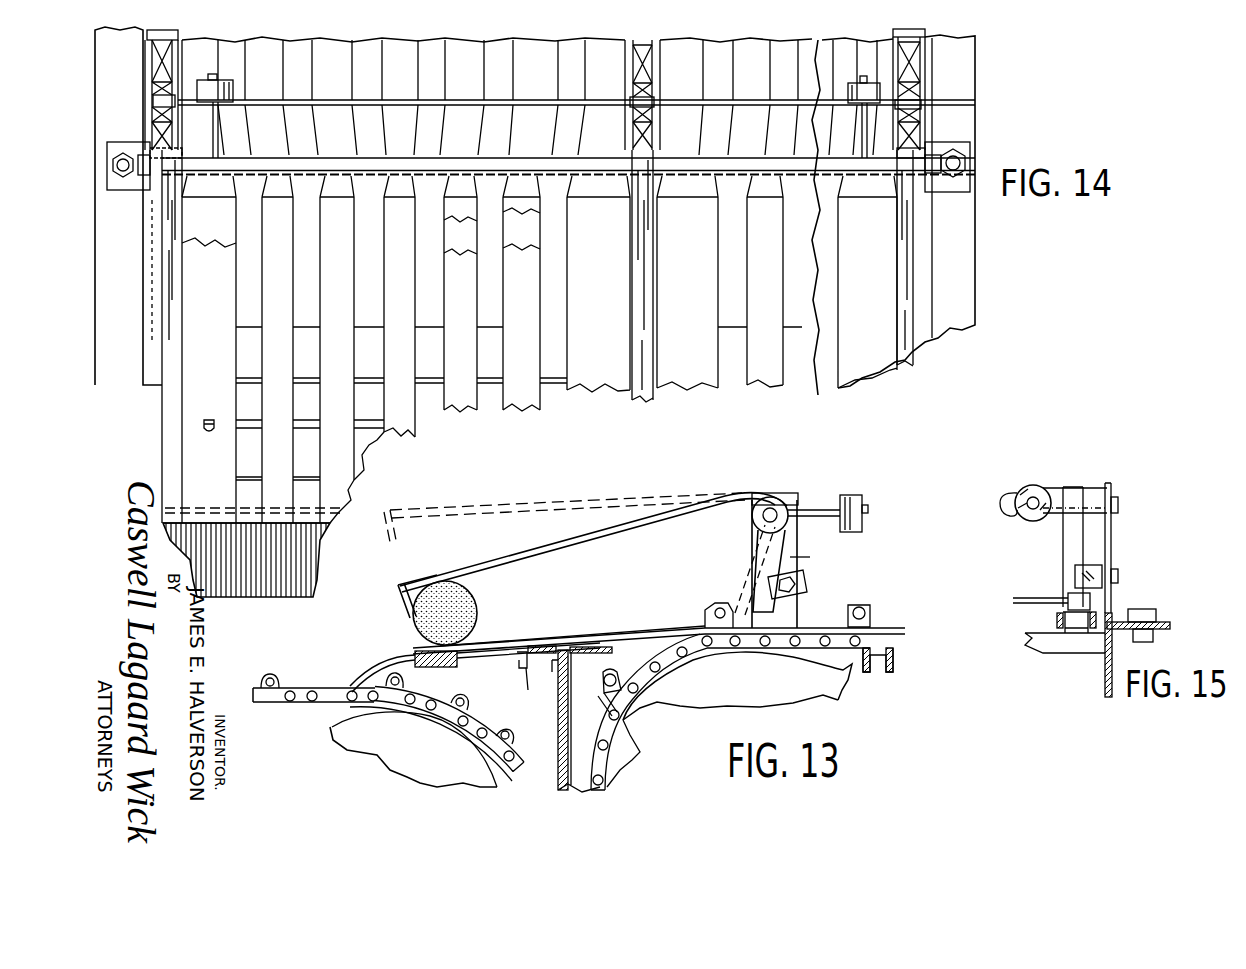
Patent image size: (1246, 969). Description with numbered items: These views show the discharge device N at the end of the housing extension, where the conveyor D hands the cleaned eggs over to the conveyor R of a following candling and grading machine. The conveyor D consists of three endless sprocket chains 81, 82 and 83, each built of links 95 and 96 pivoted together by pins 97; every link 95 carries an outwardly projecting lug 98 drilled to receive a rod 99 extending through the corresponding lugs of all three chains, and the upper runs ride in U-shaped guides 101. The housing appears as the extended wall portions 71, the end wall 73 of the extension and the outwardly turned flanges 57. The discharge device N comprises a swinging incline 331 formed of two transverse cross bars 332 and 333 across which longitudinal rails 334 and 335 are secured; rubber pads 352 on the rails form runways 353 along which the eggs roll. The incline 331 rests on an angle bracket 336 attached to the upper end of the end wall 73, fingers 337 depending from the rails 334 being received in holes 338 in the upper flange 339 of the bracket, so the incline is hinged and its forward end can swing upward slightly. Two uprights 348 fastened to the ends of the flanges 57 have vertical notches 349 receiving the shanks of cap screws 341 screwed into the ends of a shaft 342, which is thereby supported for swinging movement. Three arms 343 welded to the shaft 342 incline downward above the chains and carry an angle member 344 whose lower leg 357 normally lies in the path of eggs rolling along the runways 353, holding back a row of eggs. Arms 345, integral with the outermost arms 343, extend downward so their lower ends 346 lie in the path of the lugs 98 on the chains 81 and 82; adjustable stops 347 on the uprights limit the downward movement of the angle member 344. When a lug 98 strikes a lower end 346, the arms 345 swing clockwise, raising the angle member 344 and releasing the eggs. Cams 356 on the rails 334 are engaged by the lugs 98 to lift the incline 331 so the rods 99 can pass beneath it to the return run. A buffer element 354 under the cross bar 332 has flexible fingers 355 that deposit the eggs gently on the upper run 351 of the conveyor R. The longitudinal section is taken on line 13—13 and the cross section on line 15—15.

In FIG. 14, the outwardly turned flanges 57 is at (130, 372).
In FIG. 15, the extended portions of the walls 71 is at (1106, 677).
In FIG. 13, the end wall 73 is at (558, 738).
In FIG. 14, the endless sprocket chain 81 is at (917, 43).
In FIG. 14, the endless sprocket chain 82 is at (150, 76).
In FIG. 13, the endless sprocket chain 82 is at (670, 657).
In FIG. 15, the endless sprocket chain 82 is at (1062, 632).
In FIG. 14, the endless sprocket chain 83 is at (640, 77).
In FIG. 13, the link 95 is at (615, 735).
In FIG. 13, the link 96 is at (632, 695).
In FIG. 13, the pin 97 is at (620, 717).
In FIG. 14, the lug 98 is at (153, 101).
In FIG. 13, the lug 98 is at (617, 687).
In FIG. 15, the lug 98 is at (1090, 600).
In FIG. 14, the rod 99 is at (690, 120).
In FIG. 13, the rod 99 is at (608, 676).
In FIG. 15, the rod 99 is at (1016, 603).
In FIG. 15, the U-shaped guide 101 is at (1058, 625).
In FIG. 14, the swinging incline 331 is at (542, 300).
In FIG. 13, the swinging incline 331 is at (632, 638).
In FIG. 13, the transverse cross bar 332 is at (475, 645).
In FIG. 13, the transverse cross bar 333 is at (590, 642).
In FIG. 14, the longitudinal rail 334 is at (228, 234).
In FIG. 13, the longitudinal rail 334 is at (665, 636).
In FIG. 14, the longitudinal rail 335 is at (527, 240).
In FIG. 14, the angle bracket 336 is at (432, 420).
In FIG. 13, the angle bracket 336 is at (550, 700).
In FIG. 14, the finger 337 is at (212, 418).
In FIG. 13, the finger 337 is at (516, 666).
In FIG. 13, the hole 338 is at (555, 676).
In FIG. 14, the upper flange 339 is at (385, 445).
In FIG. 13, the upper flange 339 is at (548, 645).
In FIG. 14, the cap screw 341 is at (141, 157).
In FIG. 13, the cap screw 341 is at (777, 508).
In FIG. 15, the cap screw 341 is at (1119, 506).
In FIG. 14, the shaft 342 is at (697, 170).
In FIG. 13, the shaft 342 is at (758, 518).
In FIG. 15, the shaft 342 is at (1012, 492).
In FIG. 14, the arm 343 is at (167, 272).
In FIG. 13, the arm 343 is at (655, 526).
In FIG. 15, the arm 343 is at (1062, 538).
In FIG. 14, the angle member 344 is at (258, 487).
In FIG. 13, the angle member 344 is at (398, 590).
In FIG. 13, the arm 345 is at (785, 553).
In FIG. 13, the lower end 346 is at (746, 597).
In FIG. 13, the adjustable stop 347 is at (805, 585).
In FIG. 15, the adjustable stop 347 is at (1075, 575).
In FIG. 14, the upright 348 is at (148, 183).
In FIG. 13, the upright 348 is at (795, 562).
In FIG. 15, the upright 348 is at (1112, 550).
In FIG. 14, the vertical notch 349 is at (155, 163).
In FIG. 13, the vertical notch 349 is at (770, 497).
In FIG. 13, the upper run 351 is at (325, 688).
In FIG. 14, the rubber pad 352 is at (338, 358).
In FIG. 14, the runway 353 is at (367, 308).
In FIG. 13, the runway 353 is at (520, 645).
In FIG. 14, the buffer element 354 is at (297, 573).
In FIG. 13, the buffer element 354 is at (368, 678).
In FIG. 14, the flexible finger 355 is at (275, 580).
In FIG. 13, the cam 356 is at (718, 605).
In FIG. 14, the lower leg 357 is at (210, 92).
In FIG. 13, the lower leg 357 is at (405, 620).
In FIG. 15, the lower leg 357 is at (1036, 488).
In FIG. 14, the section line 13 is at (275, 60).
In FIG. 13, the section line 13 is at (258, 638).
In FIG. 13, the section line 15 is at (927, 493).
In FIG. 13, the discharge device N is at (497, 562).
In FIG. 15, the discharge device N is at (1075, 486).
In FIG. 14, the conveyor D is at (920, 70).
In FIG. 15, the conveyor D is at (1074, 628).
In FIG. 13, the conveyor R is at (277, 700).